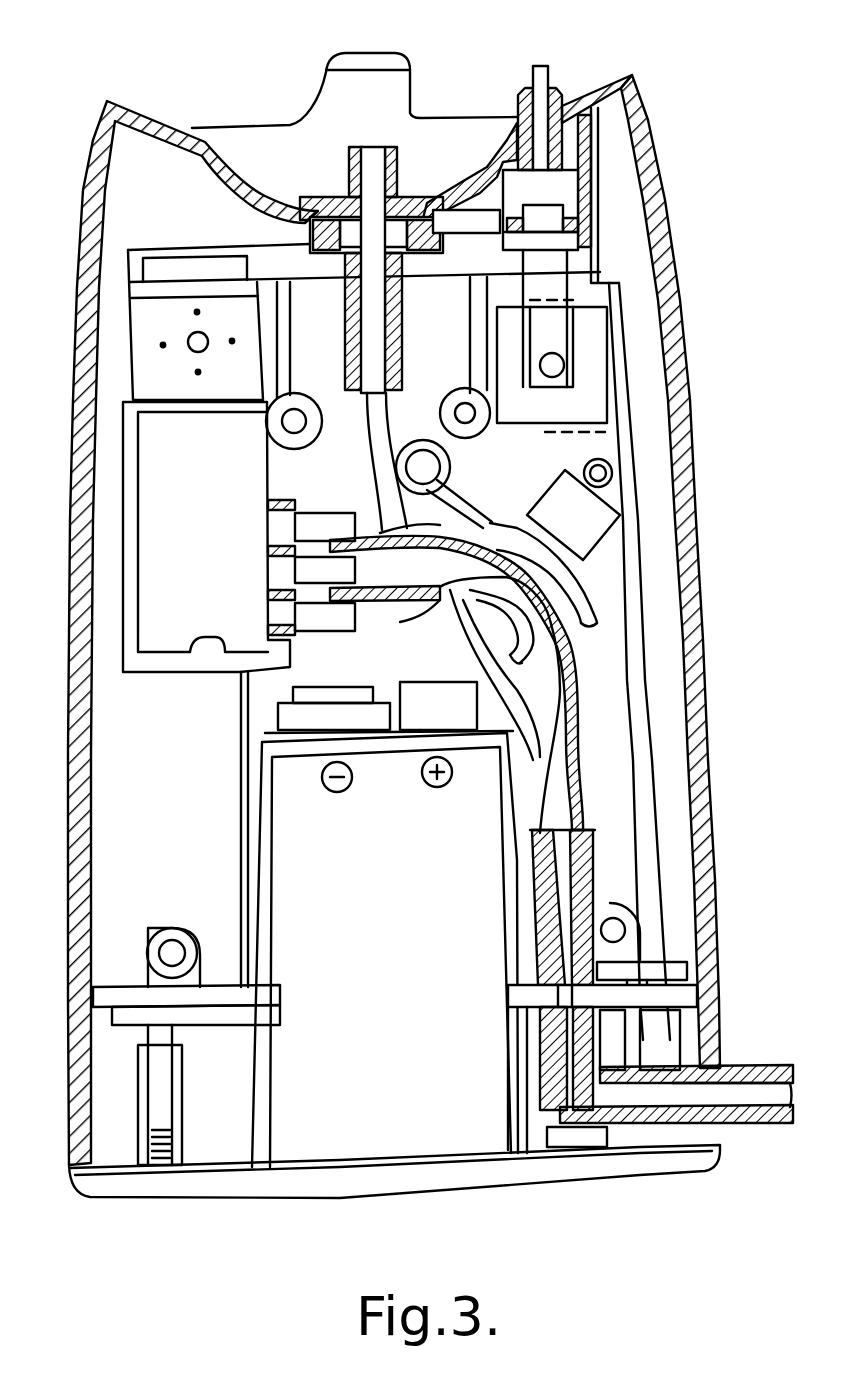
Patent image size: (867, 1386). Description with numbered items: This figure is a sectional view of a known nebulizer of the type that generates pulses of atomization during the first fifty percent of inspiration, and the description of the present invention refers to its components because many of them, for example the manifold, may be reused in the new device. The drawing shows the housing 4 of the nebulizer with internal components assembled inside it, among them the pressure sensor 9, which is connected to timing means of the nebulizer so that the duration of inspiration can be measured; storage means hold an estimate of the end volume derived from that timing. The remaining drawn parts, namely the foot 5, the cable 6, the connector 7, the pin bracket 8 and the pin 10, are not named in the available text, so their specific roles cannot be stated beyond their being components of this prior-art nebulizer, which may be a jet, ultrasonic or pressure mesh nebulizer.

The housing 4 is at (652, 183).
The foot / mounting bracket 5 is at (757, 1113).
The cable 6 is at (590, 658).
The connector / circuit board 7 is at (280, 518).
The pin bracket 8 is at (350, 173).
The pressure sensor 9 is at (587, 350).
The pin 10 is at (541, 66).